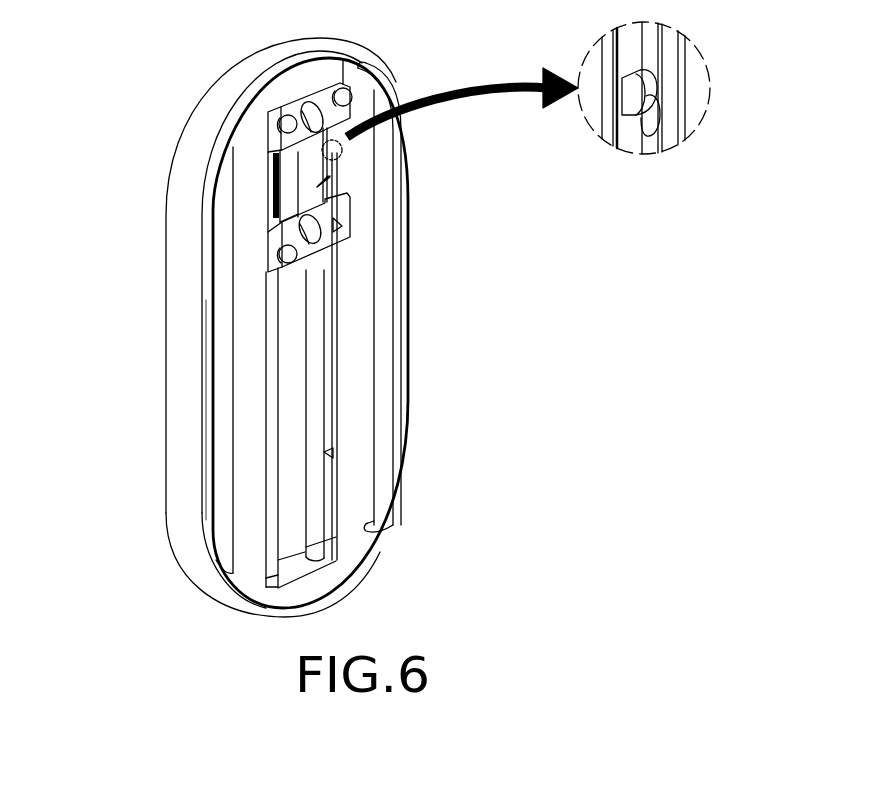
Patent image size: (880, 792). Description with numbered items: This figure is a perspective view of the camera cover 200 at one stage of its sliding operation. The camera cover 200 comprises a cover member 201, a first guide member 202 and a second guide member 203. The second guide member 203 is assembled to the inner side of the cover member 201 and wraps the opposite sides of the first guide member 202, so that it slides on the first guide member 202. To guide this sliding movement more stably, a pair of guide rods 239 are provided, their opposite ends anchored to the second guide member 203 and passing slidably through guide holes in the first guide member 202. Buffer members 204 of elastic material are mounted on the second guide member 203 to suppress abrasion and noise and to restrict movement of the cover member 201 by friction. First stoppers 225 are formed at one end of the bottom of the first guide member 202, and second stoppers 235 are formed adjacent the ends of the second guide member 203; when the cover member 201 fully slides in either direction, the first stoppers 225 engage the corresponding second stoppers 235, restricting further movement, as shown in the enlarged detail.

The camera cover 200 is at (538, 42).
The cover member 201 is at (195, 172).
The first guide member 202 is at (330, 177).
The second guide member 203 is at (250, 277).
The buffer member 204 is at (222, 402).
The first stopper 225 is at (648, 78).
The second stopper 235 is at (328, 453).
The guide rod 239 is at (268, 470).